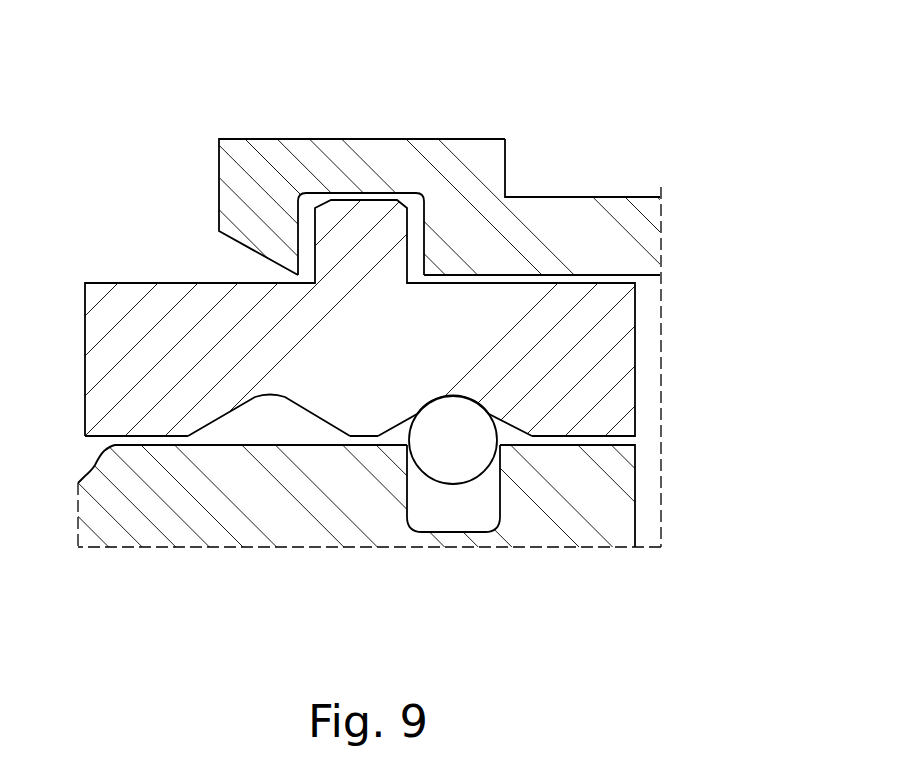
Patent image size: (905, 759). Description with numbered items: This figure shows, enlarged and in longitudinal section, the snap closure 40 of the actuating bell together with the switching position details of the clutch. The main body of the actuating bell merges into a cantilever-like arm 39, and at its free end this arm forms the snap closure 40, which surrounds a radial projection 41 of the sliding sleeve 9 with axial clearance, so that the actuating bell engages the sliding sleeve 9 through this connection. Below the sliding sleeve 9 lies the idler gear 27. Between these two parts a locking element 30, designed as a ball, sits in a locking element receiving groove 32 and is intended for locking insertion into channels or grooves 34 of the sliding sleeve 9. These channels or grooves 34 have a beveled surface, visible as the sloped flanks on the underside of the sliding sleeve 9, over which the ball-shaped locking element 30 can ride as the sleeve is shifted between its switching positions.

The snap closure 40 is at (315, 128).
The radial projection 41 is at (368, 222).
The cantilever-like arm 39 is at (549, 235).
The sliding sleeve 9 is at (605, 346).
The channels/grooves 34 is at (257, 413).
The locking element 30 is at (477, 462).
The idler gear 27 is at (202, 512).
The locking element receiving groove 32 is at (453, 517).